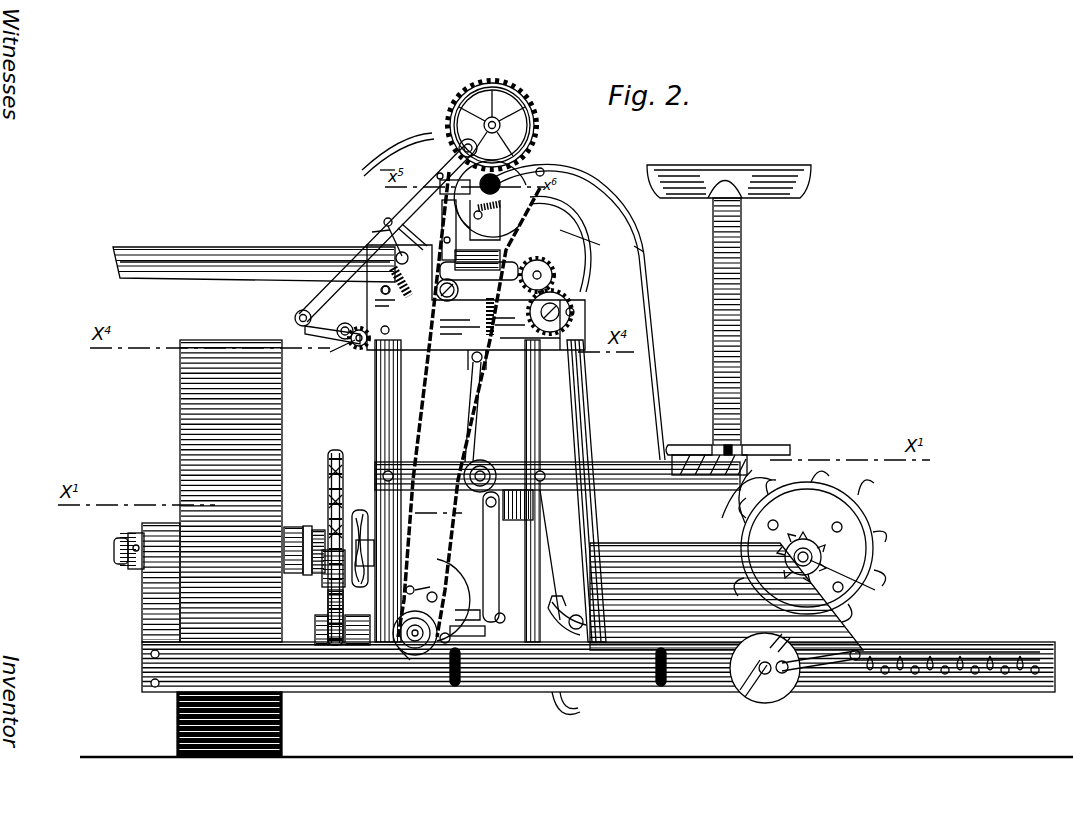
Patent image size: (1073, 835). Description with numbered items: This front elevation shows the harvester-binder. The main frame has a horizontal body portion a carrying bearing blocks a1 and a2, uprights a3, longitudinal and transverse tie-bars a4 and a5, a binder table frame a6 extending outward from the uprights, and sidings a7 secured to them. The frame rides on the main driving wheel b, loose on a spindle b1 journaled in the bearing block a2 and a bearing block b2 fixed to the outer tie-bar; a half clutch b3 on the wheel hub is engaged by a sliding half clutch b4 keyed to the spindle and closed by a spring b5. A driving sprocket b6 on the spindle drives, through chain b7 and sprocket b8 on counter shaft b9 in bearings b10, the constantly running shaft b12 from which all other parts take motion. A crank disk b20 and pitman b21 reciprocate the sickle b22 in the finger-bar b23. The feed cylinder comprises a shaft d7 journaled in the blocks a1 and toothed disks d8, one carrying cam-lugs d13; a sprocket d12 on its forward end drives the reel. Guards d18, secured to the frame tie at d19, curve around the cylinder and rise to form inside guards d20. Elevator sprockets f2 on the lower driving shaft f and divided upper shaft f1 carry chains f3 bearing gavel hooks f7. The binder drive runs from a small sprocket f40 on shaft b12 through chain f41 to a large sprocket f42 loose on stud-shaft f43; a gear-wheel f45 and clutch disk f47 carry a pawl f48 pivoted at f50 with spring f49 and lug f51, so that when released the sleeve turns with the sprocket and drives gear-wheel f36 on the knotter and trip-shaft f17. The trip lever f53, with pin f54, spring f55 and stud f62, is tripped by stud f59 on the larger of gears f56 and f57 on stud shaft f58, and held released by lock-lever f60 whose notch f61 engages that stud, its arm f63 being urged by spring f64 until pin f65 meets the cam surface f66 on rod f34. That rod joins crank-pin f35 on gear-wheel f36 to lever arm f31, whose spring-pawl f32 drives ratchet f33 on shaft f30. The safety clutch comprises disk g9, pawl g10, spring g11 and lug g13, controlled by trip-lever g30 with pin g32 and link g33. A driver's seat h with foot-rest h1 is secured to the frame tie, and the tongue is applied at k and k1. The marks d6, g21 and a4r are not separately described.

The horizontal body portion of main frame a is at (320, 692).
The bearing blocks a1 is at (686, 557).
The bearing block a2 is at (152, 585).
The uprights a3 is at (380, 412).
The longitudinal tie-bars a4 is at (366, 540).
The transverse tie-bars a5 is at (632, 478).
The binder table frame a6 is at (242, 282).
The sidings a7 is at (476, 297).
The main driving wheel b is at (190, 436).
The spindle or shaft b1 is at (114, 550).
The bearing block b2 is at (410, 585).
The half clutch b3 is at (294, 527).
The sliding half clutch b4 is at (309, 576).
The spring b5 is at (318, 530).
The driving sprocket b6 is at (333, 452).
The chain b7 is at (322, 588).
The sprocket b8 is at (364, 590).
The counter shaft b9 is at (315, 630).
The bearings b10 is at (350, 647).
The constantly running shaft b12 is at (400, 662).
The crank disk b20 is at (770, 700).
The pitman b21 is at (828, 665).
The sickle b22 is at (880, 652).
The finger-bar b23 is at (918, 675).
The bar d6 is at (253, 256).
The feed cylinder shaft d7 is at (856, 578).
The toothed disks d8 is at (866, 530).
The sprocket wheel d12 is at (820, 555).
The cam-lugs d13 is at (778, 522).
The guards d18 is at (725, 512).
The guard attachment point d19 is at (680, 444).
The inside guards d20 is at (503, 205).
The lower elevator shaft f is at (556, 635).
The upper elevator shaft f1 is at (560, 272).
The sprocket wheels f2 is at (564, 710).
The elevator chains f3 is at (548, 568).
The gavel carrying hook-like arms f7 is at (568, 252).
The knotter operating and trip-shaft f17 is at (528, 140).
The shaft f30 is at (336, 358).
The lever arm f31 is at (332, 342).
The spring-pawl f32 is at (352, 322).
The ratchet f33 is at (358, 348).
The rod f34 is at (342, 305).
The crank-pin f35 is at (460, 148).
The gear-wheel f36 is at (530, 120).
The small sprocket wheel f40 is at (420, 656).
The chain f41 is at (420, 426).
The sprocket wheel f42 is at (590, 190).
The stud-shaft f43 is at (500, 187).
The gear-wheel f45 is at (508, 162).
The clutch disk f47 is at (544, 170).
The bell-crank pawl or clutch member f48 is at (438, 229).
The spring f49 is at (488, 221).
The pivotal point f50 is at (467, 221).
The projecting lug f51 is at (425, 145).
The bell-crank trip lever f53 is at (477, 262).
The projecting pin f54 is at (442, 183).
The spring f55 is at (486, 308).
The gear f56 is at (556, 276).
The gear f57 is at (570, 322).
The stud shaft f58 is at (530, 341).
The projecting stud f59 is at (575, 312).
The bell-crank lock-lever f60 is at (415, 234).
The notch f61 is at (469, 280).
The stud f62 is at (433, 201).
The arm f63 is at (390, 278).
The spring f64 is at (381, 296).
The projecting pin f65 is at (390, 233).
The cam surface f66 is at (385, 230).
The clutch disk g9 is at (455, 590).
The pawl or clutch member g10 is at (471, 597).
The spring g11 is at (423, 583).
The lug g13 is at (475, 634).
The lever g21 is at (510, 556).
The trip-lever g30 is at (466, 455).
The pin g32 is at (504, 613).
The link g33 is at (470, 362).
The seat h is at (712, 218).
The foot-rest h1 is at (770, 444).
The tongue k is at (547, 608).
The tongue attachment k1 is at (460, 688).
The bracket a4r is at (720, 465).